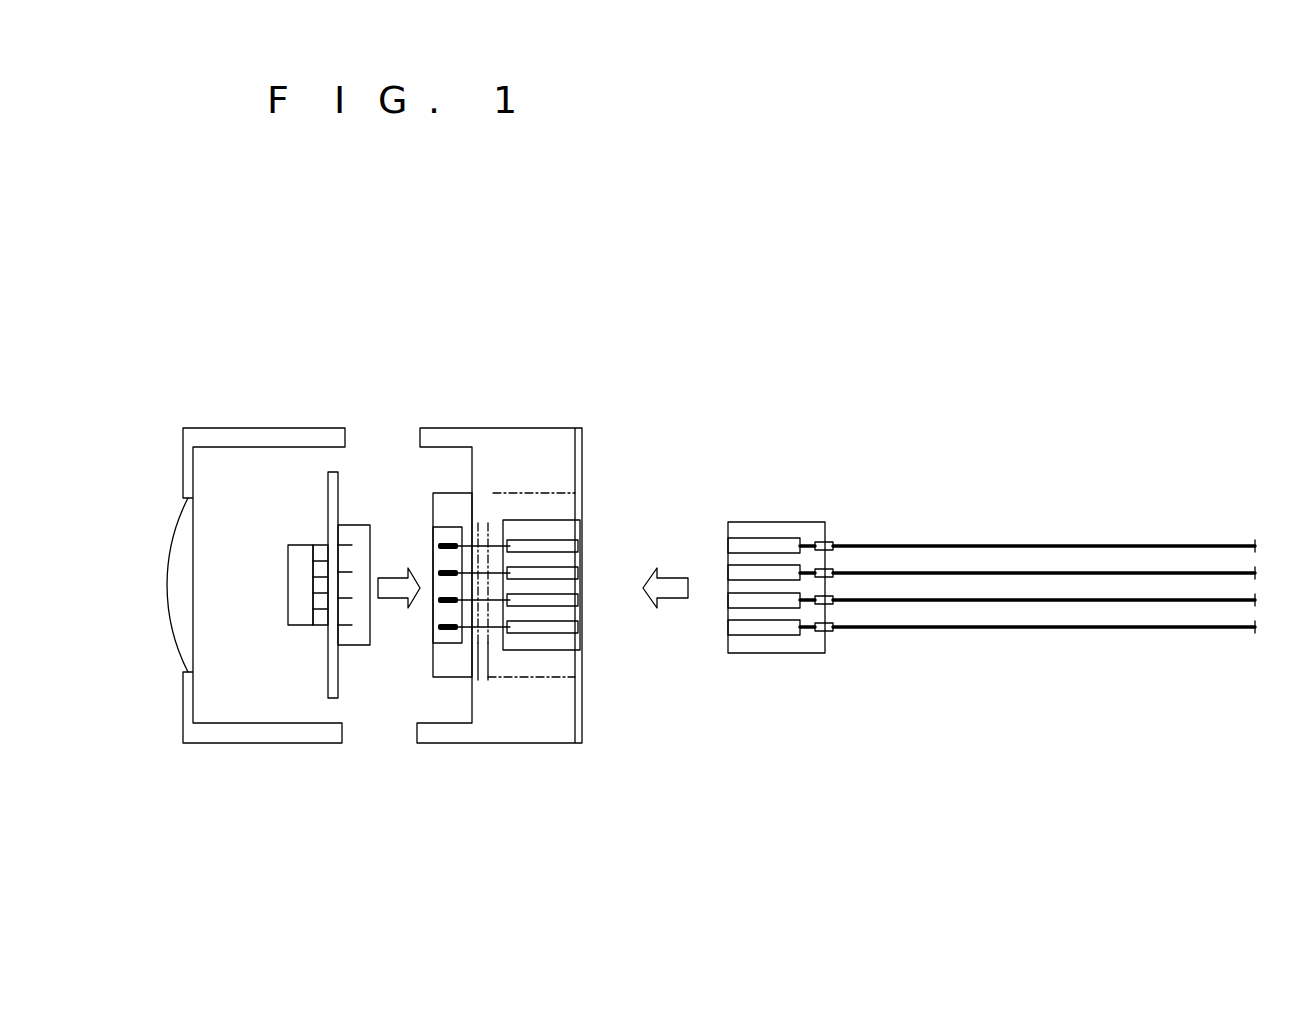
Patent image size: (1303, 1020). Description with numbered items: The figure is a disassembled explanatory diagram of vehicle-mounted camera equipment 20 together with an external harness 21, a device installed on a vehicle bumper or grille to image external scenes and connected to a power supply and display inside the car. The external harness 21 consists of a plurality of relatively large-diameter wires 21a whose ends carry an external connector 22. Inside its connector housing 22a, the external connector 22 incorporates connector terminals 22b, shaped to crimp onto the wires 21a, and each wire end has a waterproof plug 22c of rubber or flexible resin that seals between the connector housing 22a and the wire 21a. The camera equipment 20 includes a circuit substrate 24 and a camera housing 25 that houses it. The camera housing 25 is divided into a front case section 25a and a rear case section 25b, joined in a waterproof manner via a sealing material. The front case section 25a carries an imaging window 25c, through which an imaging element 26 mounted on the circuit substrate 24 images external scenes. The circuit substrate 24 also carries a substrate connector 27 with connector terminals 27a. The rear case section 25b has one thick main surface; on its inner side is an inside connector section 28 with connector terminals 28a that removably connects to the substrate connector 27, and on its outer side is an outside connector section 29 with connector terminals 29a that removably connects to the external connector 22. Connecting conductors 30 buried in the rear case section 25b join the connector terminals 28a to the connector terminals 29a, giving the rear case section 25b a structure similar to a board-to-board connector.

The vehicle-mounted camera equipment 20 is at (557, 316).
The external harness 21 is at (1012, 443).
The wires 21a is at (1102, 574).
The external connector 22 is at (743, 522).
The connector housing 22a is at (743, 643).
The connector terminals 22b is at (782, 547).
The waterproof plug 22c is at (833, 573).
The circuit substrate 24 is at (338, 698).
The camera housing 25 is at (263, 428).
The front case section 25a is at (213, 743).
The rear case section 25b is at (483, 743).
The imaging window 25c is at (181, 665).
The imaging element 26 is at (298, 625).
The substrate connector 27 is at (353, 647).
The connector terminals 27a is at (348, 568).
The inside connector section 28 is at (449, 493).
The connector terminals 28a is at (437, 573).
The outside connector section 29 is at (537, 493).
The connector terminals 29a is at (572, 600).
The connecting conductors 30 is at (488, 523).